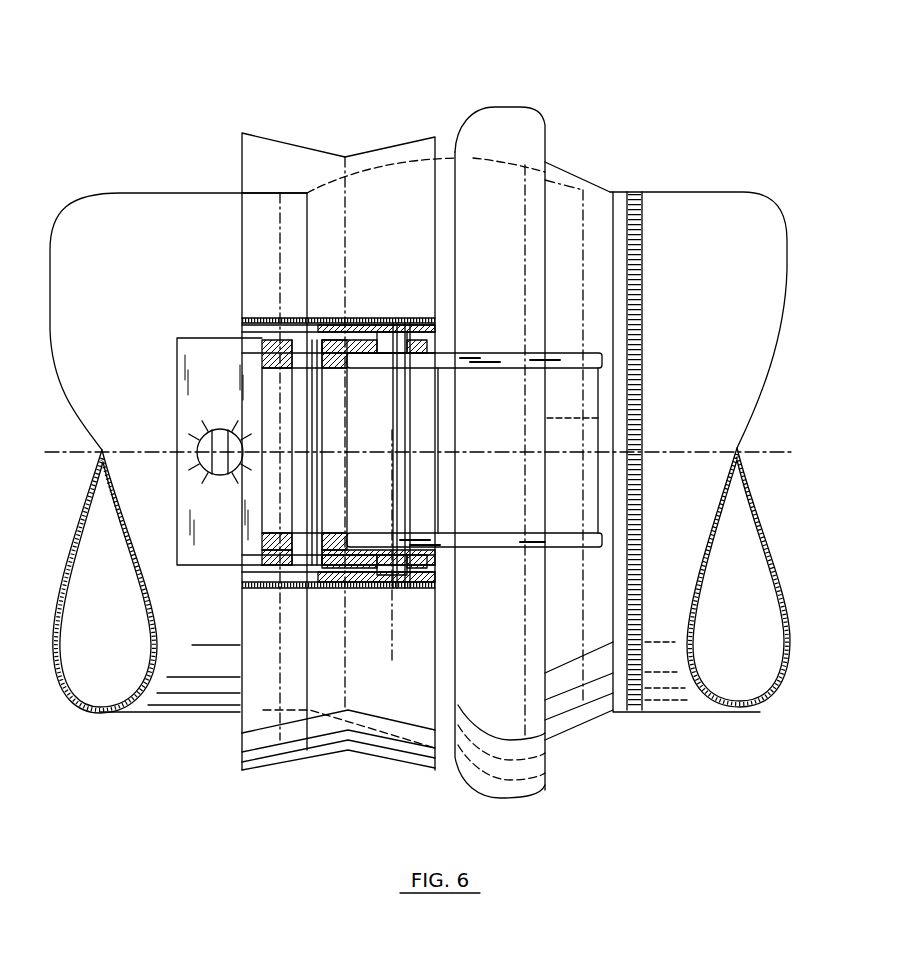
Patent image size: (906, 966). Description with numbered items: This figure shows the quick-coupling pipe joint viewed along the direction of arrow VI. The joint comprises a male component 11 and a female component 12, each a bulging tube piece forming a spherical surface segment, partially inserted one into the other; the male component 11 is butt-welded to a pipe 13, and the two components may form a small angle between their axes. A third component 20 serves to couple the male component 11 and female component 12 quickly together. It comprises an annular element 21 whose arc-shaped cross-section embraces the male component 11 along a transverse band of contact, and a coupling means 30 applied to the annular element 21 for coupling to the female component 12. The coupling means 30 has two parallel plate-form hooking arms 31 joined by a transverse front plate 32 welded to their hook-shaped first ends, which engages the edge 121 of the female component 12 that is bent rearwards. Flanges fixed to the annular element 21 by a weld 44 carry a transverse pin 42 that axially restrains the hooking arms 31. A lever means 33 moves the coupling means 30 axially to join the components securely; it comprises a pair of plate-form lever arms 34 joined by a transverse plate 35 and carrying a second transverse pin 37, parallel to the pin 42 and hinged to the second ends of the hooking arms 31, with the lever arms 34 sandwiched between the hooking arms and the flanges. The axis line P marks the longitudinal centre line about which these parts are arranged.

The male component 11 is at (720, 192).
The female component 12 is at (545, 147).
The pipe 13 is at (120, 193).
The third component 20 is at (402, 140).
The annular element 21 is at (268, 143).
The edge 121 is at (497, 112).
The coupling means 30 is at (520, 355).
The hooking arm 31 is at (470, 353).
The transverse front plate 32 is at (598, 418).
The lever means 33 is at (227, 568).
The lever arm 34 is at (350, 325).
The transverse plate 35 is at (205, 355).
The second transverse pin 37 is at (318, 433).
The transverse pin 42 is at (398, 473).
The weld 44 is at (278, 318).
The pivot axis P is at (62, 455).